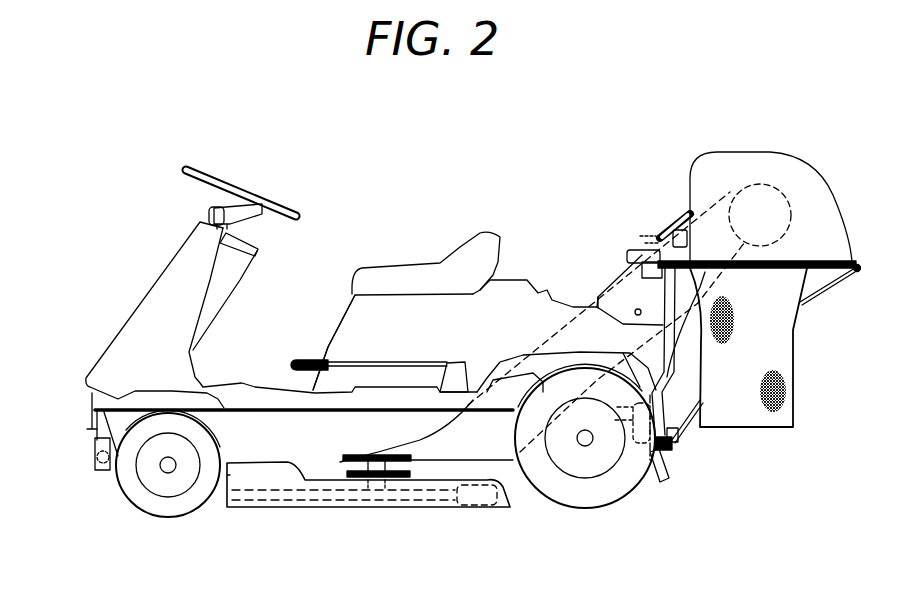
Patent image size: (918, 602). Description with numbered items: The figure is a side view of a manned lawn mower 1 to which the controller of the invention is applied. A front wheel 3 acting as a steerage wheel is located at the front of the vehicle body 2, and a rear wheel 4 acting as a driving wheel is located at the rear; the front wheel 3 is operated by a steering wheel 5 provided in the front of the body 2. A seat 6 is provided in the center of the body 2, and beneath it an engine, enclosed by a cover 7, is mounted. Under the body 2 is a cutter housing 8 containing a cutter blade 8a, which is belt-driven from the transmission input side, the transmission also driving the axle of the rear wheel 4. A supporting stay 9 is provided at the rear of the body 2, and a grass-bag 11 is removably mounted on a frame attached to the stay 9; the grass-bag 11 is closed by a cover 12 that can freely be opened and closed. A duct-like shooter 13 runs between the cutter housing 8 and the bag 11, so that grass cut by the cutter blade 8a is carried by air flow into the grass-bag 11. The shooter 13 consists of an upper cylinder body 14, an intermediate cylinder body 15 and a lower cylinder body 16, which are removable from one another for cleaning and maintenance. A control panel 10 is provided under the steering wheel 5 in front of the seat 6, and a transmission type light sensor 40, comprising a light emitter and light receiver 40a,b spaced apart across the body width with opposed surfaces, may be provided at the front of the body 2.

The lawn mower 1 is at (495, 220).
The vehicle body 2 is at (249, 394).
The front wheel 3 is at (140, 502).
The rear wheel 4 is at (633, 490).
The steering wheel 5 is at (233, 178).
The seat 6 is at (417, 266).
The cover 7 is at (353, 313).
The cutter housing 8 is at (325, 500).
The cutter blade 8a is at (245, 500).
The supporting stay 9 is at (673, 347).
The control panel 10 is at (262, 233).
The grass-bag 11 is at (793, 352).
The cover 12 is at (835, 176).
The shooter 13 is at (609, 270).
The upper cylinder body 14 is at (668, 232).
The intermediate cylinder body 15 is at (598, 305).
The lower cylinder body 16 is at (423, 445).
The transmission type light sensor 40 is at (88, 450).
The light emitter and light receiver 40a,b is at (100, 470).